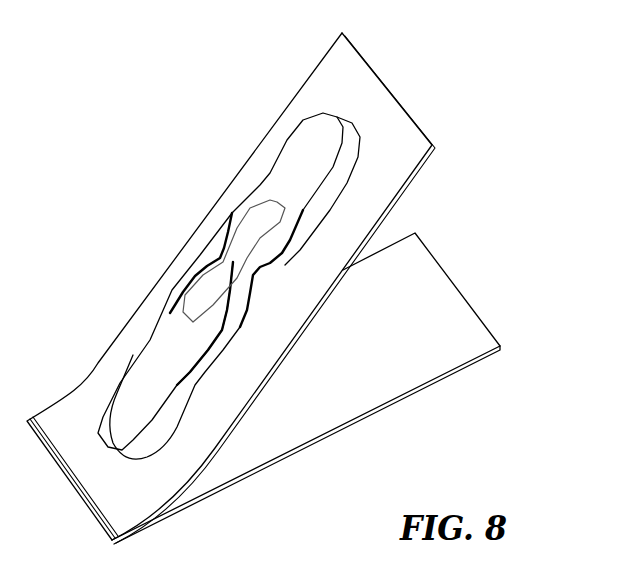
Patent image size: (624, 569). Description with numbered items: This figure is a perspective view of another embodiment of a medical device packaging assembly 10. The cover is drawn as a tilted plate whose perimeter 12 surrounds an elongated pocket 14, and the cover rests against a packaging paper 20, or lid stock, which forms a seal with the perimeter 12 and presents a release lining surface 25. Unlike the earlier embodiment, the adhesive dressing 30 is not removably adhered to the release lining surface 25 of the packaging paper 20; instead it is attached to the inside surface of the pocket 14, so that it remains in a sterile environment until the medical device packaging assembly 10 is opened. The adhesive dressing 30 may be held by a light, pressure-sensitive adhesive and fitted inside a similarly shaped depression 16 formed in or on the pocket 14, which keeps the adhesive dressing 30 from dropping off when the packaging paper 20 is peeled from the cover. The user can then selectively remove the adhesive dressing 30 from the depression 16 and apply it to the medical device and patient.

The medical device packaging assembly 10 is at (428, 205).
The perimeter 12 is at (347, 82).
The pocket 14 is at (188, 278).
The depression 16 is at (185, 308).
The packaging paper 20 is at (442, 386).
The release lining surface 25 is at (422, 315).
The adhesive dressing 30 is at (200, 305).